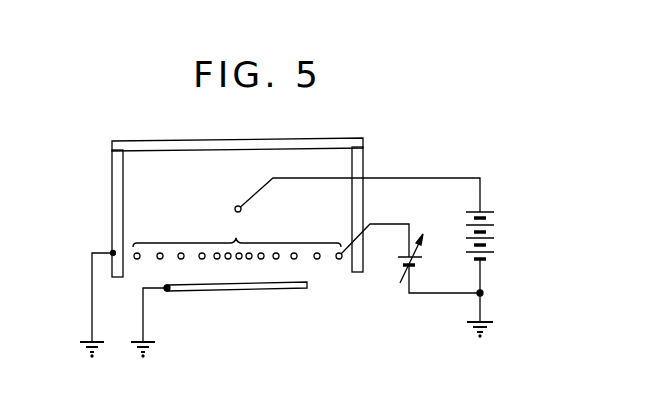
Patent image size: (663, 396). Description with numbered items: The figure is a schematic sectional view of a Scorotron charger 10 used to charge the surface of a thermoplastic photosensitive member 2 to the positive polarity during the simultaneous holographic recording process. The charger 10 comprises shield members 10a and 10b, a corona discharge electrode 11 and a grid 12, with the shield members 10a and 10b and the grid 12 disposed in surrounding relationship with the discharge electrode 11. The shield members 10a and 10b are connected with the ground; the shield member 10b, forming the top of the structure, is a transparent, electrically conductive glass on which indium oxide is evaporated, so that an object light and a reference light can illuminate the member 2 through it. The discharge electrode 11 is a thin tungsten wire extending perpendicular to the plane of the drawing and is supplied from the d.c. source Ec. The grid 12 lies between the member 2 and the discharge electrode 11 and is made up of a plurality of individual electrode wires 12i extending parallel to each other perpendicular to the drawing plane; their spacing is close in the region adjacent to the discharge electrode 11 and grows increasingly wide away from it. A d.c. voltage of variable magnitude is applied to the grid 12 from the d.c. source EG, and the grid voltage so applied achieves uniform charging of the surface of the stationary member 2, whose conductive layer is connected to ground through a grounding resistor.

The charger 10 is at (242, 189).
The shield member 10a is at (112, 183).
The shield member 10b is at (162, 149).
The corona discharge electrode 11 is at (237, 206).
The grid 12 is at (220, 264).
The individual electrode wire 12i is at (158, 261).
The thermoplastic photosensitive member 2 is at (265, 291).
The d.c. source Ec is at (494, 233).
The d.c. source EG is at (395, 262).